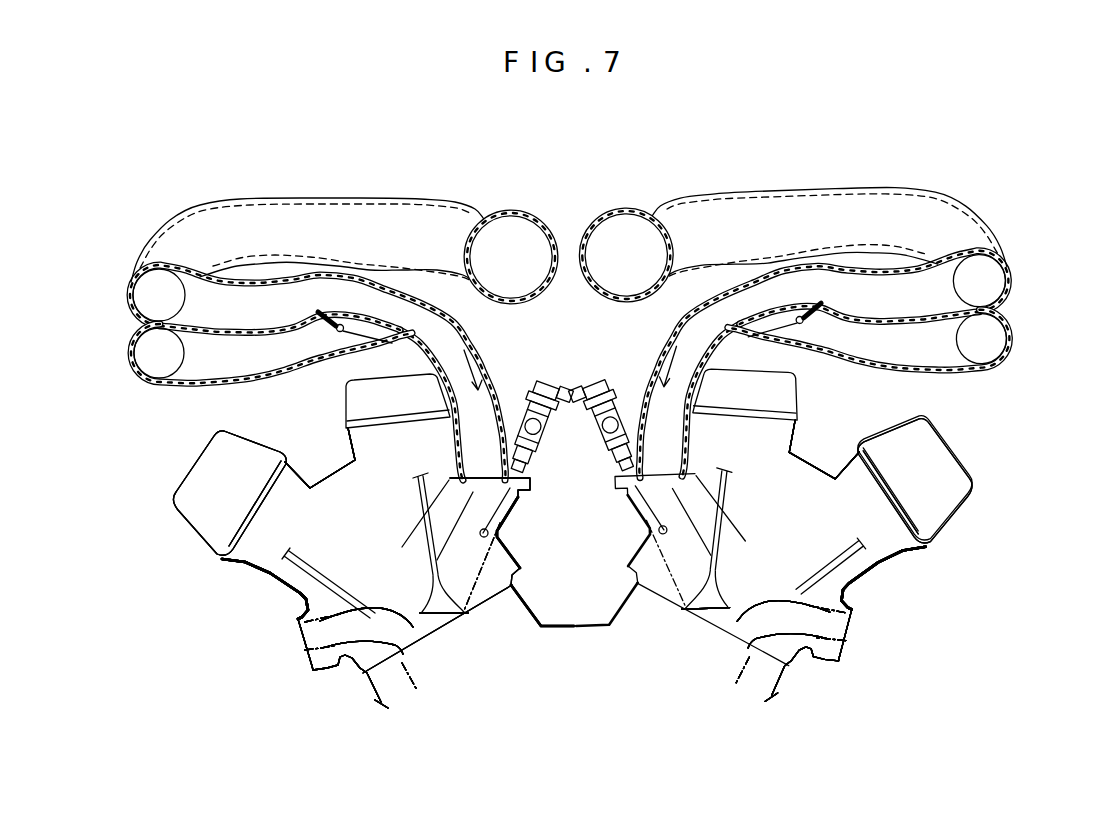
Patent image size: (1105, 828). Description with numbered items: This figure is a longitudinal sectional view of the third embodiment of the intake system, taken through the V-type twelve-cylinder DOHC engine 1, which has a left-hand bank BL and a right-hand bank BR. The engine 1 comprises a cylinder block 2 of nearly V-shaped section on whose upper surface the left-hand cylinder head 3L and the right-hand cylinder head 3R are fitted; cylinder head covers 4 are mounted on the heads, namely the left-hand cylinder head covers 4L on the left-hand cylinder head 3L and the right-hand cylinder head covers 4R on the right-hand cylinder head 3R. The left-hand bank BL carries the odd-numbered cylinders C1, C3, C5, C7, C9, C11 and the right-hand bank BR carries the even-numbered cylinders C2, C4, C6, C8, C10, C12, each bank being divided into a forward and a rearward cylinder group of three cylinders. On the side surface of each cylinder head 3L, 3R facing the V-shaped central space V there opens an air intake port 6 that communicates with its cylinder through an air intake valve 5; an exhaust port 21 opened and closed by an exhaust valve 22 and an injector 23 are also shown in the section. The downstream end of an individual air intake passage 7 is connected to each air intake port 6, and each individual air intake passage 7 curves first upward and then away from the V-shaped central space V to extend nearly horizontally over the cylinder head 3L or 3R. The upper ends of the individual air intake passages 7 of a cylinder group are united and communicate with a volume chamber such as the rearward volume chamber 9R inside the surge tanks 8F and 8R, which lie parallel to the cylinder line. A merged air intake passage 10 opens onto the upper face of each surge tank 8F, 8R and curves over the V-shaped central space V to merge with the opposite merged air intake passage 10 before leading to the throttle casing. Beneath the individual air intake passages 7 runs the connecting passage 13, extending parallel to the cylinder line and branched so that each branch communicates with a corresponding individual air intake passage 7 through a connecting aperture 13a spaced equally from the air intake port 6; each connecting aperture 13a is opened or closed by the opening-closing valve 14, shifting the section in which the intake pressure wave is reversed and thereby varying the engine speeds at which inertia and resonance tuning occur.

The V-type 12-cylinder DOHC engine 1 is at (158, 468).
The cylinder block 2 is at (574, 622).
The left-hand cylinder head 3L is at (224, 555).
The right-hand cylinder head 3R is at (918, 547).
The cylinder head cover 4 is at (346, 412).
The left-hand cylinder head cover 4L is at (184, 496).
The right-hand cylinder head cover 4R is at (797, 407).
The air intake valve 5 is at (420, 522).
The air intake port 6 is at (490, 535).
The individual air intake passage 7 is at (476, 347).
The surge tank 8F is at (131, 293).
The surge tank 8R is at (1009, 268).
The rearward volume chamber 9R is at (138, 352).
The merged air intake passage 10 is at (292, 196).
The connecting passage 13 is at (238, 380).
The connecting aperture 13a is at (364, 320).
The opening-closing valve 14 is at (326, 326).
The exhaust port 21 is at (858, 649).
The exhaust valve 22 is at (283, 599).
The injector 23 is at (559, 390).
The V-shaped central space V is at (535, 585).
The left-hand bank BL is at (262, 669).
The right-hand bank BR is at (908, 639).
The first cylinder C1 is at (345, 596).
The second cylinder C2 is at (803, 590).
The third cylinder C3 is at (345, 596).
The fourth cylinder C4 is at (803, 590).
The fifth cylinder C5 is at (357, 596).
The sixth cylinder C6 is at (803, 590).
The seventh cylinder C7 is at (380, 596).
The eighth cylinder C8 is at (803, 590).
The ninth cylinder C9 is at (402, 596).
The tenth cylinder C10 is at (815, 590).
The eleventh cylinder C11 is at (429, 596).
The twelfth cylinder C12 is at (835, 590).